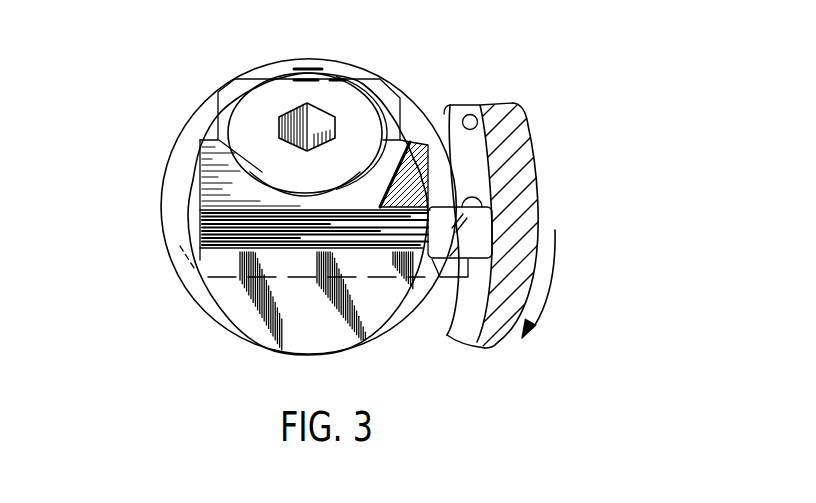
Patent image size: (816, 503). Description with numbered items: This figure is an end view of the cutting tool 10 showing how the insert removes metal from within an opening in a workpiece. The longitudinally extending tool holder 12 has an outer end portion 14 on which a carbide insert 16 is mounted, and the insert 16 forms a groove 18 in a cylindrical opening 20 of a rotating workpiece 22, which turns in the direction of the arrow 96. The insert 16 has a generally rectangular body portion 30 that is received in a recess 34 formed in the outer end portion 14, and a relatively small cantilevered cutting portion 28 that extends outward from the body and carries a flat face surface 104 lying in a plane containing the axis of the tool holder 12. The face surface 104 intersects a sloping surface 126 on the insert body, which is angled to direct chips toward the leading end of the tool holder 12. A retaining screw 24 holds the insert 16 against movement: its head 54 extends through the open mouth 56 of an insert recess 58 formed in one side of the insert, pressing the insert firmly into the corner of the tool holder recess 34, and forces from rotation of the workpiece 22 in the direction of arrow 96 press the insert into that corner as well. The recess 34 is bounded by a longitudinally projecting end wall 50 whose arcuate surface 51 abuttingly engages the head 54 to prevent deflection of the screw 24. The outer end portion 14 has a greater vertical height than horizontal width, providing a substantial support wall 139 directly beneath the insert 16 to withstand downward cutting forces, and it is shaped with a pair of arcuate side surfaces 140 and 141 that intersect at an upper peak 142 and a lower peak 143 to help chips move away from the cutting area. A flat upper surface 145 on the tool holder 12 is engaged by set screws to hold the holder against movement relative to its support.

The cutting tool 10 is at (110, 92).
The tool holder 12 is at (146, 173).
The outer end portion 14 is at (240, 343).
The insert 16 is at (187, 211).
The groove 18 is at (475, 117).
The cylindrical opening 20 is at (444, 114).
The workpiece 22 is at (548, 138).
The retaining screw 24 is at (252, 118).
The cutting portion 28 is at (490, 240).
The body portion 30 is at (186, 225).
The recess 34 is at (193, 172).
The end wall 50 is at (333, 74).
The arcuate surface 51 is at (226, 112).
The head 54 is at (281, 92).
The open mouth 56 is at (398, 120).
The insert recess 58 is at (302, 186).
The arrow 96 is at (548, 280).
The face surface 104 is at (460, 227).
The sloping surface 126 is at (384, 181).
The support wall 139 is at (343, 333).
The arcuate side surface 140 is at (222, 318).
The arcuate side surface 141 is at (392, 320).
The upper peak 142 is at (307, 60).
The lower peak 143 is at (303, 357).
The flat upper surface 145 is at (245, 80).